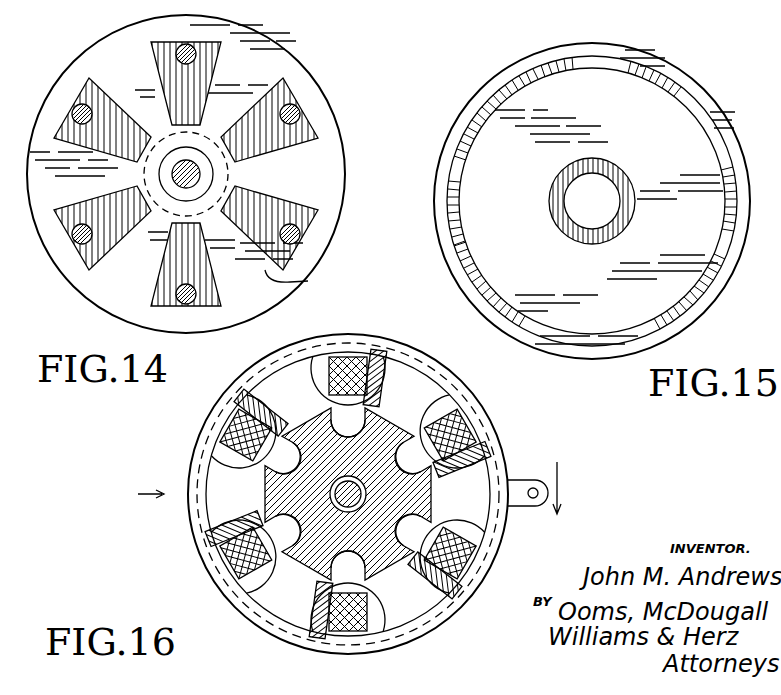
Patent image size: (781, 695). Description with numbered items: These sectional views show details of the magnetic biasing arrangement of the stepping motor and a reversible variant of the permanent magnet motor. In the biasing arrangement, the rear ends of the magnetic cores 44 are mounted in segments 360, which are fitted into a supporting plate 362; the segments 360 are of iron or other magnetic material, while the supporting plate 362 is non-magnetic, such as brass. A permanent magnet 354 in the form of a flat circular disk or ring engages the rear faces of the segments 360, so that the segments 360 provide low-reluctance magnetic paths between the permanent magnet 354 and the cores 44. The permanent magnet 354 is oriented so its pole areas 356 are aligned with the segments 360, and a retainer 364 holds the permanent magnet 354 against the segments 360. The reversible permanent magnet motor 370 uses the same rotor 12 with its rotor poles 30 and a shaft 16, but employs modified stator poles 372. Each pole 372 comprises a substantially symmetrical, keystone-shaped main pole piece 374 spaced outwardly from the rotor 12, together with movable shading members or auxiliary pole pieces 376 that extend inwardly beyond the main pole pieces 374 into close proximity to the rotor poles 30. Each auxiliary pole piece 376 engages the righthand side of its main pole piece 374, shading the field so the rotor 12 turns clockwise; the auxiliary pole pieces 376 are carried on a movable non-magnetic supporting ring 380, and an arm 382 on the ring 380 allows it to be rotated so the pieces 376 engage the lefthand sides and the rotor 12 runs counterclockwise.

In FIG. 16, the rotor 12 is at (400, 498).
In FIG. 14, the shaft 16 is at (240, 172).
In FIG. 16, the shaft 16 is at (332, 489).
In FIG. 16, the rotor poles 30 is at (331, 422).
In FIG. 14, the magnetic cores 44 is at (75, 108).
In FIG. 15, the permanent magnet 354 is at (668, 292).
In FIG. 15, the pole areas 356 is at (608, 98).
In FIG. 14, the segments 360 is at (158, 72).
In FIG. 14, the supporting plate 362 is at (308, 280).
In FIG. 15, the retainer 364 is at (680, 70).
In FIG. 16, the permanent magnet motor 370 is at (131, 494).
In FIG. 16, the stator poles 372 is at (472, 406).
In FIG. 16, the main pole pieces 374 is at (308, 392).
In FIG. 16, the auxiliary pole pieces 376 is at (248, 410).
In FIG. 16, the supporting ring 380 is at (243, 605).
In FIG. 16, the arm 382 is at (524, 506).